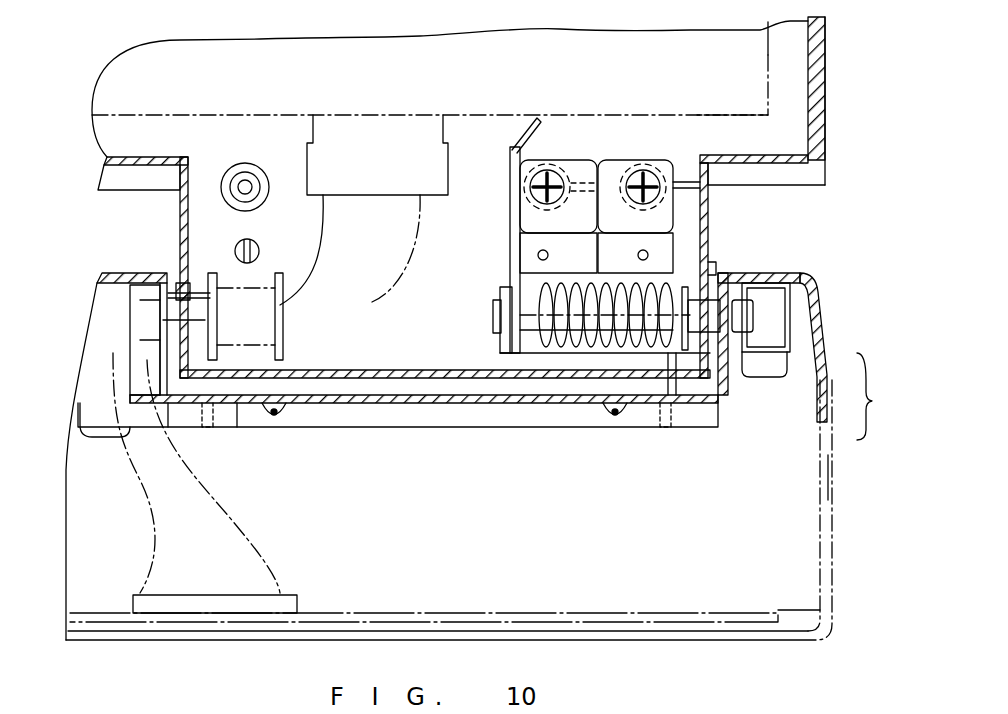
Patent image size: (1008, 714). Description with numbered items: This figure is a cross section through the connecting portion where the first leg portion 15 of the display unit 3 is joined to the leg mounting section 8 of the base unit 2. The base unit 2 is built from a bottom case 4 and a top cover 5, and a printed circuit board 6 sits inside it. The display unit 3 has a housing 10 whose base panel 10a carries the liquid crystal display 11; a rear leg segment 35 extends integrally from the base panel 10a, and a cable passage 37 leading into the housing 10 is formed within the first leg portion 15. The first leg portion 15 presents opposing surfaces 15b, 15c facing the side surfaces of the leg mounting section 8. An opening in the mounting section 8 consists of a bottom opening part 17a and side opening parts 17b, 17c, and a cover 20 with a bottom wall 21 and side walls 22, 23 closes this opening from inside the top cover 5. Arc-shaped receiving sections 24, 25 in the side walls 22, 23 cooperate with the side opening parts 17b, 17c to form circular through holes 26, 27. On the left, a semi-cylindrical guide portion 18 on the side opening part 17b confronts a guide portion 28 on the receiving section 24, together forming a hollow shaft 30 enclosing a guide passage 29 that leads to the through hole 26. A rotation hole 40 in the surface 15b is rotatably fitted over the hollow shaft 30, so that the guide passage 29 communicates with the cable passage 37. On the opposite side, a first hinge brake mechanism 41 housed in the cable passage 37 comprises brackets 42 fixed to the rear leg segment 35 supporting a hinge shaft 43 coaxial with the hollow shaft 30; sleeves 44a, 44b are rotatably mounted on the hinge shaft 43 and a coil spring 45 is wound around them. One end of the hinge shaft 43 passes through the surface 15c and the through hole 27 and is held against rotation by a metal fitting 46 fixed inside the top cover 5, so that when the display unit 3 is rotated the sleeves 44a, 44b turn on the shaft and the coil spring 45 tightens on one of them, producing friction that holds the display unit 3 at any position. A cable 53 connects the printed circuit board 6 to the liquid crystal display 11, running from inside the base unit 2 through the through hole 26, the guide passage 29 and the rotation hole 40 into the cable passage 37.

The base unit 2 is at (850, 496).
The display unit 3 is at (830, 52).
The bottom case 4 is at (830, 496).
The top cover 5 is at (827, 380).
The printed circuit board 6 is at (572, 612).
The leg mounting section 8 is at (670, 398).
The housing 10 is at (108, 162).
The base panel 10a is at (825, 108).
The liquid crystal display 11 is at (768, 55).
The first leg portion 15 is at (709, 174).
The opposing surface 15b is at (180, 203).
The opposing surface 15c is at (708, 236).
The bottom opening part 17a is at (434, 404).
The side opening part 17b is at (173, 297).
The side opening part 17c is at (720, 278).
The guide portion 18 is at (192, 292).
The cover 20 is at (376, 404).
The bottom wall 21 is at (480, 404).
The side wall 22 is at (180, 416).
The side wall 23 is at (716, 366).
The receiving section 24 is at (168, 347).
The receiving section 25 is at (755, 322).
The through hole 26 is at (175, 320).
The through hole 27 is at (760, 306).
The guide portion 28 is at (185, 352).
The guide passage 29 is at (185, 305).
The hollow shaft 30 is at (165, 333).
The rear leg segment 35 is at (342, 397).
The cable passage 37 is at (473, 210).
The rotation hole 40 is at (180, 290).
The first hinge brake mechanism 41 is at (642, 158).
The brackets 42 is at (612, 172).
The hinge shaft 43 is at (707, 265).
The sleeve 44a is at (533, 355).
The sleeve 44b is at (663, 350).
The coil spring 45 is at (598, 347).
The metal fitting 46 is at (753, 372).
The cable 53 is at (378, 300).